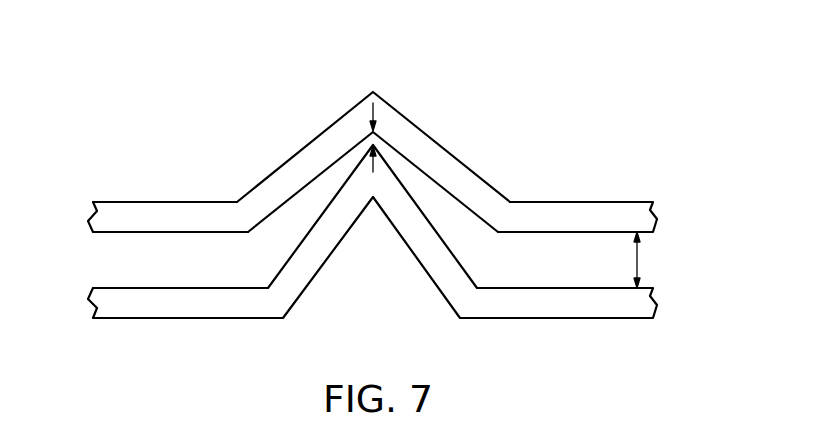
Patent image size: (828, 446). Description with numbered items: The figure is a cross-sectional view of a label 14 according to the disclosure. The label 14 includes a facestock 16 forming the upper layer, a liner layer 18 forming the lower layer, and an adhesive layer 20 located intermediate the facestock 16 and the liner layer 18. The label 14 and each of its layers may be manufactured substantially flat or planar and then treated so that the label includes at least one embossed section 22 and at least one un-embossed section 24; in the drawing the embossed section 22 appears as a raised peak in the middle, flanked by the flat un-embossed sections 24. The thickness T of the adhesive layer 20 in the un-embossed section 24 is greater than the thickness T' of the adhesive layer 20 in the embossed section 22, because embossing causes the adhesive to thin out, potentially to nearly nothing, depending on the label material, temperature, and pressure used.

The label 14 is at (373, 215).
The facestock 16 is at (372, 147).
The liner layer 18 is at (543, 310).
The adhesive layer 20 is at (128, 260).
The embossed section 22 is at (298, 143).
The un-embossed section 24 is at (195, 199).
The thickness of the adhesive layer in the un-embossed section T is at (659, 260).
The thickness of the adhesive layer in the embossed section T' is at (405, 133).